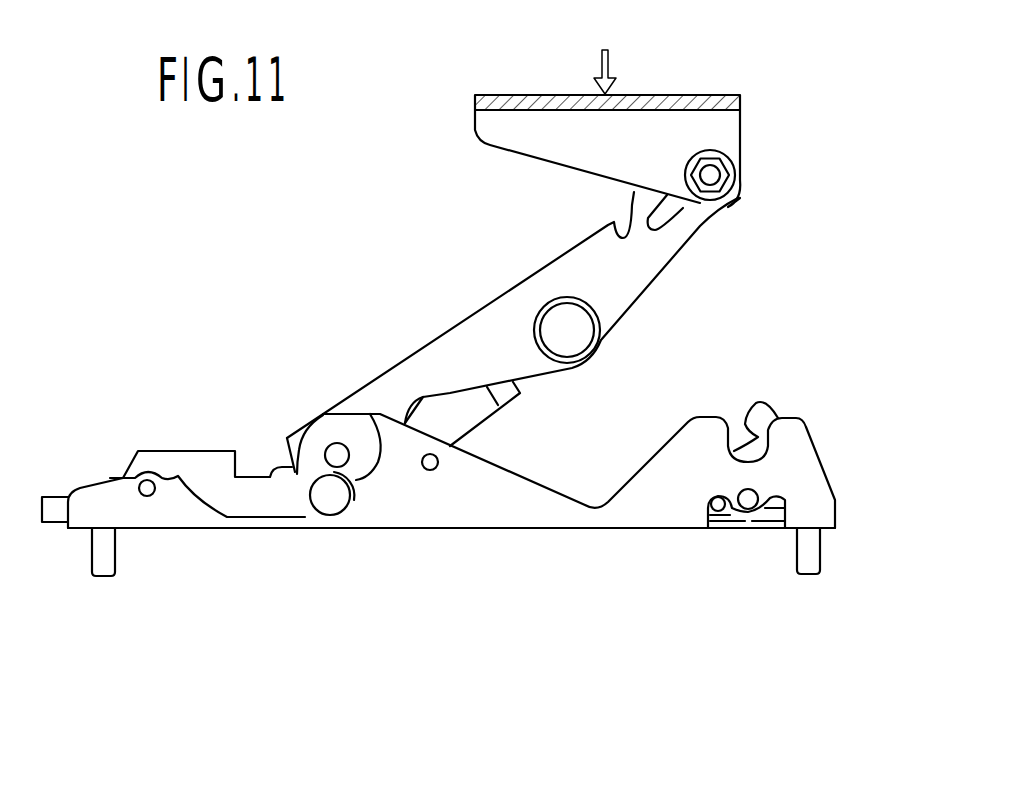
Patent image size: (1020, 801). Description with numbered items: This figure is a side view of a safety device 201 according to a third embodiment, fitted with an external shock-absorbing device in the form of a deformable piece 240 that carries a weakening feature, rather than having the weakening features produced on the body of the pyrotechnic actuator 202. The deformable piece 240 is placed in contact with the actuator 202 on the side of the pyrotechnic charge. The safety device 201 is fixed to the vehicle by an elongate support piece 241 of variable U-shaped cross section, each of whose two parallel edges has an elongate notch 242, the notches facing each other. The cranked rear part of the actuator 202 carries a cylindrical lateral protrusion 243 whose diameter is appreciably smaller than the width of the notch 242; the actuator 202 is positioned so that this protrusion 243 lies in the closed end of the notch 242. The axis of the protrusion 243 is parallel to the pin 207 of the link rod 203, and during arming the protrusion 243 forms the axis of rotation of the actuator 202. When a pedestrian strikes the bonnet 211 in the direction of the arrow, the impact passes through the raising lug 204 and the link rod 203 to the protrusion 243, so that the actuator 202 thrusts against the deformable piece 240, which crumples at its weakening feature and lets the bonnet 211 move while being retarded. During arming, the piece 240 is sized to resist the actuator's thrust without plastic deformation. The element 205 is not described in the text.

The safety device 201 is at (198, 376).
The pyrotechnic actuator 202 is at (449, 400).
The link rod 203 is at (528, 305).
The raising lug 204 is at (670, 125).
The stopper notch 205 is at (758, 414).
The pin 207 is at (332, 448).
The bonnet 211 is at (514, 95).
The deformable piece 240 is at (142, 466).
The support piece 241 is at (445, 505).
The notch 242 is at (368, 412).
The cylindrical lateral protrusion 243 is at (333, 502).